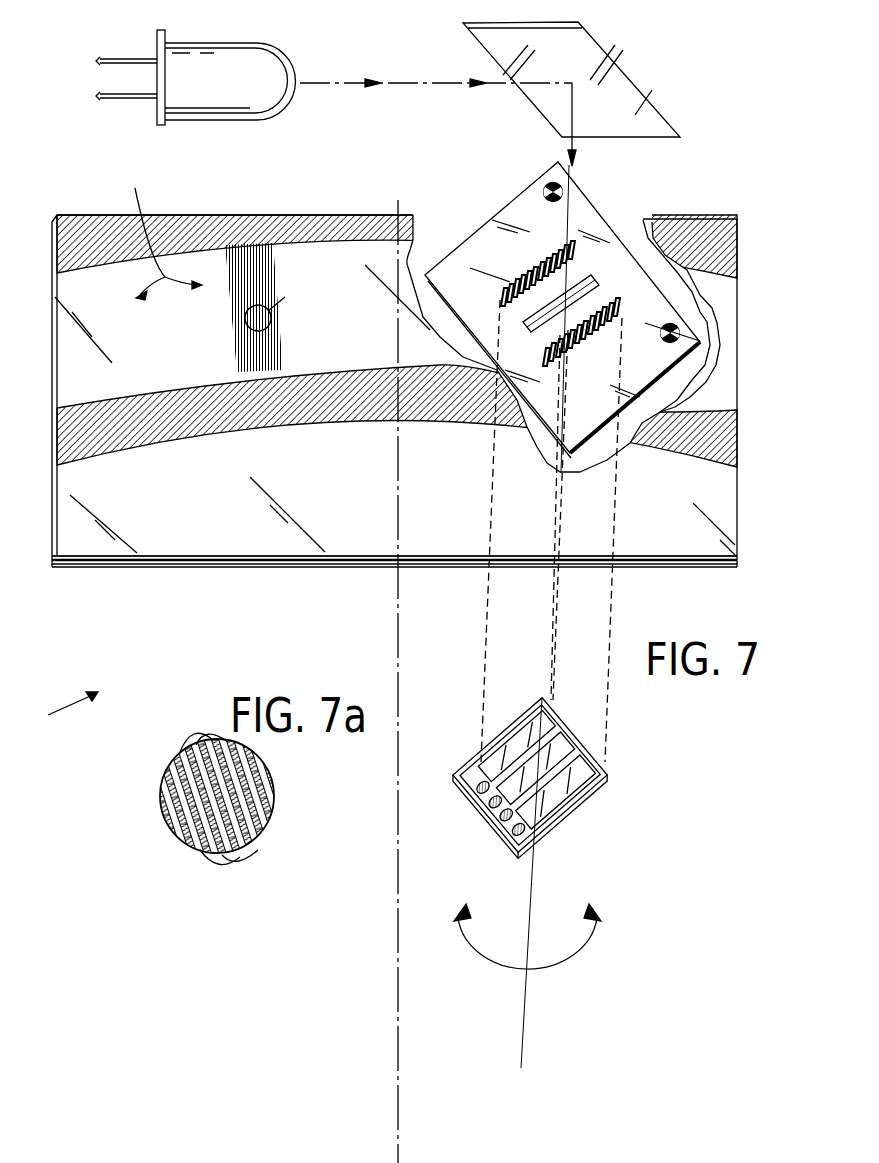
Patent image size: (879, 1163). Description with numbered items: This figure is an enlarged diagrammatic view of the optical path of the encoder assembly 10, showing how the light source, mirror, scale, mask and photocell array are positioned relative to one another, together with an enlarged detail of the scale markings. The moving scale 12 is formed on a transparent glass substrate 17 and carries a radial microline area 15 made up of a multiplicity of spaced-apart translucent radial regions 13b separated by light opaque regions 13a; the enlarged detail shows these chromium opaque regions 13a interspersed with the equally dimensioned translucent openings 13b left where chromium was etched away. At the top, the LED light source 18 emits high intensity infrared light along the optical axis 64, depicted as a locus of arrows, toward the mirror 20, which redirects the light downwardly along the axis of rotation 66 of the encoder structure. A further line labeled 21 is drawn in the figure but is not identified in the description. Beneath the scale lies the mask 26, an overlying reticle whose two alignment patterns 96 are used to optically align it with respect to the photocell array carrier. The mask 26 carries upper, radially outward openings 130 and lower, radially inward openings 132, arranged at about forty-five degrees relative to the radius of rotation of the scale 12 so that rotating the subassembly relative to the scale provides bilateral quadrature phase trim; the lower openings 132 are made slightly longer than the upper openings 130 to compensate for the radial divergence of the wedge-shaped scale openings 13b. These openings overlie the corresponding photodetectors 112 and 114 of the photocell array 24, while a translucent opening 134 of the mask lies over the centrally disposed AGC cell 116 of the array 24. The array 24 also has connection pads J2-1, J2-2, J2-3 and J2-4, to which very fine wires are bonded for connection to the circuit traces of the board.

In FIG. 7, the encoder assembly 10 is at (59, 710).
In FIG. 7, the moving scale 12 is at (160, 447).
In FIG. 7A, the light opaque regions 13a is at (232, 868).
In FIG. 7A, the translucent radial regions 13b is at (200, 730).
In FIG. 7, the radial microline area 15 is at (162, 232).
In FIG. 7, the transparent glass substrate 17 is at (83, 540).
In FIG. 7, the LED light source 18 is at (258, 52).
In FIG. 7, the mirror 20 is at (657, 125).
In FIG. 7, the center line 21 is at (405, 1160).
In FIG. 7, the photocell array 24 is at (505, 773).
In FIG. 7, the mask 26 is at (578, 195).
In FIG. 7, the optical axis 64 is at (412, 88).
In FIG. 7, the axis of rotation 66 is at (565, 135).
In FIG. 7, the alignment patterns 96 is at (544, 192).
In FIG. 7, the photodetector 112 is at (516, 746).
In FIG. 7, the photodetector 114 is at (556, 792).
In FIG. 7, the AGC cell 116 is at (535, 768).
In FIG. 7, the upper mask openings 130 is at (523, 285).
In FIG. 7, the lower mask openings 132 is at (620, 305).
In FIG. 7, the translucent opening 134 is at (591, 275).
In FIG. 7, the connection pad J2-1 is at (483, 787).
In FIG. 7, the connection pad J2-2 is at (495, 801).
In FIG. 7, the connection pad J2-3 is at (506, 814).
In FIG. 7, the connection pad J2-4 is at (518, 829).